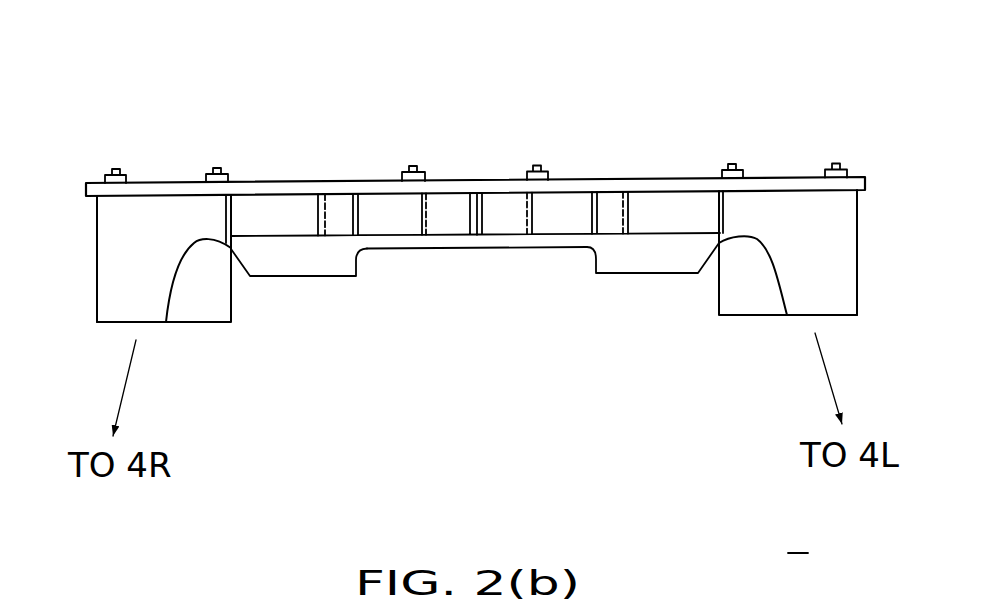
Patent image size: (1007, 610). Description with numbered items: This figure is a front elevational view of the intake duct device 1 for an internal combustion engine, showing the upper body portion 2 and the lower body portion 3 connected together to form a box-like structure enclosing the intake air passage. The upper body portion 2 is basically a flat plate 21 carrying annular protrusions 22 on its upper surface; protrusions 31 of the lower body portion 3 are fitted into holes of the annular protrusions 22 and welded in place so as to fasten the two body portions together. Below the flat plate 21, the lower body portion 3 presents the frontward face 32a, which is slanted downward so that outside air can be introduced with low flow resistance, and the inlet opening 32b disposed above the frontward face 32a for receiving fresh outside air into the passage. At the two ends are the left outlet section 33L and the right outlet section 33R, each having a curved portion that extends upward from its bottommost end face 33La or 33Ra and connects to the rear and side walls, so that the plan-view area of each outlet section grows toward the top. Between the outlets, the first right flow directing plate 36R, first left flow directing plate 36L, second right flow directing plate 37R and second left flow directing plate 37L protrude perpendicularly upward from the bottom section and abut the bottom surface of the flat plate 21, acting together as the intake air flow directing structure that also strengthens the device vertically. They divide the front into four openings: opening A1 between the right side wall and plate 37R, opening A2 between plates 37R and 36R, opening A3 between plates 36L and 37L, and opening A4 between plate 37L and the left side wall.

The intake duct device 1 is at (746, 468).
The upper body portion 2 is at (78, 187).
The lower body portion 3 is at (90, 257).
The flat plate 21 is at (96, 183).
The annular protrusions 22 is at (205, 181).
The protrusions 31 is at (217, 168).
The frontward face 32a is at (327, 263).
The inlet opening 32b is at (497, 230).
The right outlet section 33R is at (170, 300).
The bottommost end face 33Ra is at (118, 326).
The left outlet section 33L is at (778, 292).
The bottommost end face 33La is at (840, 319).
The first right flow directing plate 36R is at (460, 205).
The first left flow directing plate 36L is at (503, 205).
The second right flow directing plate 37R is at (345, 203).
The second left flow directing plate 37L is at (608, 205).
The opening A1 is at (270, 215).
The opening A2 is at (387, 213).
The opening A3 is at (565, 212).
The opening A4 is at (675, 207).